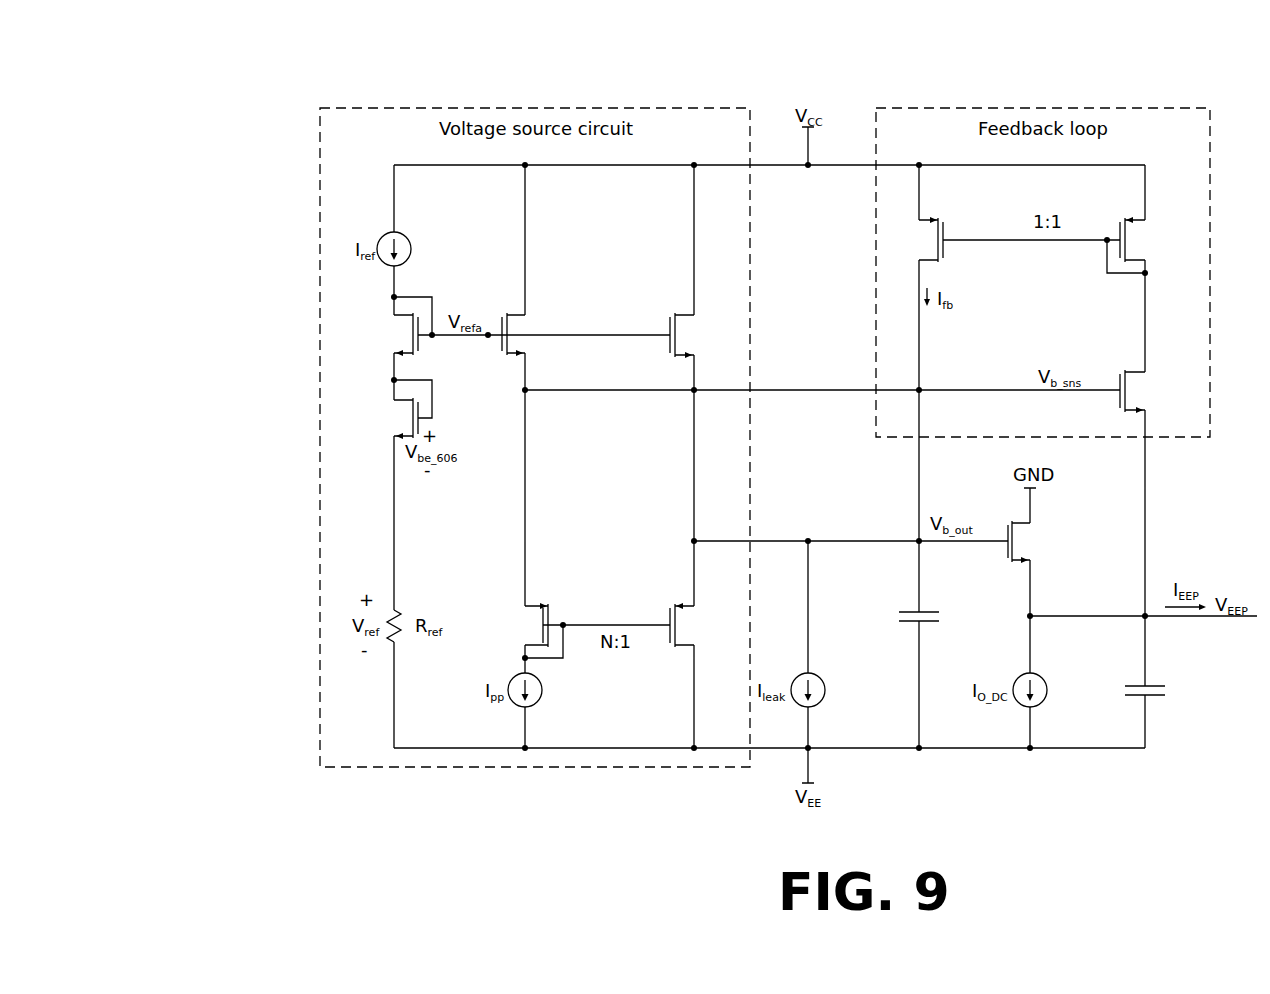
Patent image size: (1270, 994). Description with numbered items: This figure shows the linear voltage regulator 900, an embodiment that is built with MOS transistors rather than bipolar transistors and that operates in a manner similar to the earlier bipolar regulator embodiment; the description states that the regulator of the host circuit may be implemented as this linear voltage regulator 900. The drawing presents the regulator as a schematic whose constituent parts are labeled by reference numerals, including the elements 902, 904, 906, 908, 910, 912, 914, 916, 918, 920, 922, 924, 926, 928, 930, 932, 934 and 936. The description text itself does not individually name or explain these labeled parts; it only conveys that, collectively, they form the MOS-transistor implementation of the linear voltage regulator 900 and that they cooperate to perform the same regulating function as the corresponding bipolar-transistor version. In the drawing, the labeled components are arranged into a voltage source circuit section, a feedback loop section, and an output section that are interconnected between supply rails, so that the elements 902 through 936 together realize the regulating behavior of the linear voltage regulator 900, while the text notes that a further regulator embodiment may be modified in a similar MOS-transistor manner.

The linear voltage regulator 900 is at (267, 69).
The output transistor 902 is at (1012, 520).
The reference current source 904 is at (411, 245).
The transistor 906 is at (405, 316).
The transistor 908 is at (405, 402).
The feedback loop 910 is at (1212, 300).
The sense transistor 912 is at (1125, 368).
The reference resistor 914 is at (400, 612).
The voltage source circuit / transistor 916 is at (672, 108).
The transistor 918 is at (546, 608).
The current source 920 is at (542, 690).
The transistor 922 is at (684, 612).
The transistor 924 is at (680, 314).
The leakage current source 926 is at (825, 690).
The capacitor 928 is at (906, 612).
The transistor 930 is at (940, 224).
The transistor 932 is at (1125, 224).
The DC output current source 934 is at (1015, 700).
The output capacitor 936 is at (1160, 686).